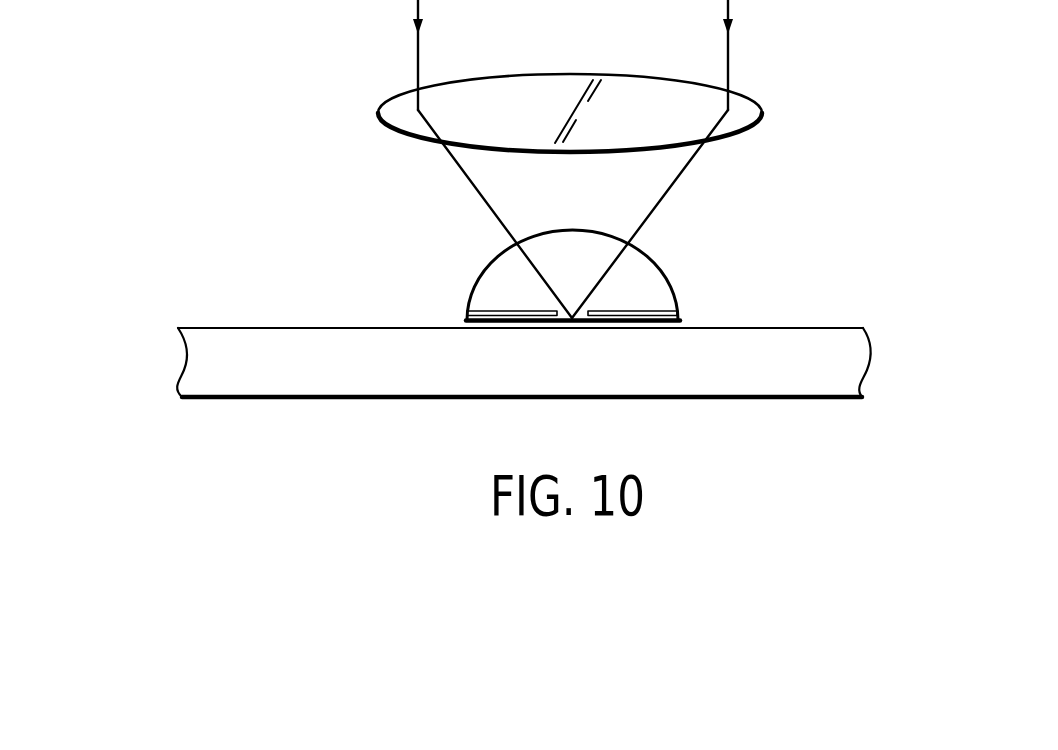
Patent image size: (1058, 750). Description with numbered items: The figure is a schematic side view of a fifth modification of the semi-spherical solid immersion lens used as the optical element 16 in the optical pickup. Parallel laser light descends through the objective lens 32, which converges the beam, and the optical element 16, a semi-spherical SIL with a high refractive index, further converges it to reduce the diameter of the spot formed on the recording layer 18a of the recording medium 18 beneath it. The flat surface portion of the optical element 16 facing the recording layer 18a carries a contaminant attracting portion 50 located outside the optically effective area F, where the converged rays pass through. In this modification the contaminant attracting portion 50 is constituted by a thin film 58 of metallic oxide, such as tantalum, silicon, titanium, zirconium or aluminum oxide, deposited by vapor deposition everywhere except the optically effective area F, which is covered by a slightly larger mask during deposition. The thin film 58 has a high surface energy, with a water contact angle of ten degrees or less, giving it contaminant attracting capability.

The objective lens 32 is at (397, 108).
The optical element 16 is at (485, 267).
The contaminant attracting portion 50 is at (503, 326).
The thin film 58 is at (657, 312).
The optically effective area F is at (578, 330).
The recording medium 18 is at (467, 321).
The recording layer 18a is at (242, 340).